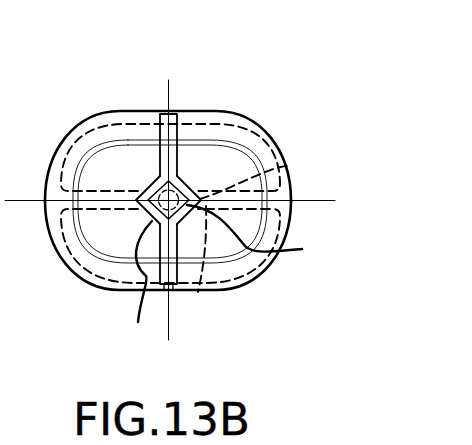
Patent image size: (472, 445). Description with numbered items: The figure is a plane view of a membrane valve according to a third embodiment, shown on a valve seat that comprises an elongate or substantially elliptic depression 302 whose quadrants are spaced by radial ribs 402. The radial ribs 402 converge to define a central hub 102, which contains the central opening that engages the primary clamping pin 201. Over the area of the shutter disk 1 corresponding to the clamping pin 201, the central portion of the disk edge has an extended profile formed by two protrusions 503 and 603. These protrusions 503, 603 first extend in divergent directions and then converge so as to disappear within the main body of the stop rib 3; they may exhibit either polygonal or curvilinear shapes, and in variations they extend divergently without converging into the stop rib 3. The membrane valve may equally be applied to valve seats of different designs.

The shutter disk 1 is at (253, 121).
The stop rib 3 is at (175, 113).
The clamping pin 201 is at (193, 192).
The radial ribs 402 is at (290, 165).
The protrusion 603 is at (265, 234).
The protrusion 503 is at (134, 290).
The depression 302 is at (97, 272).
The central hub 102 is at (198, 292).